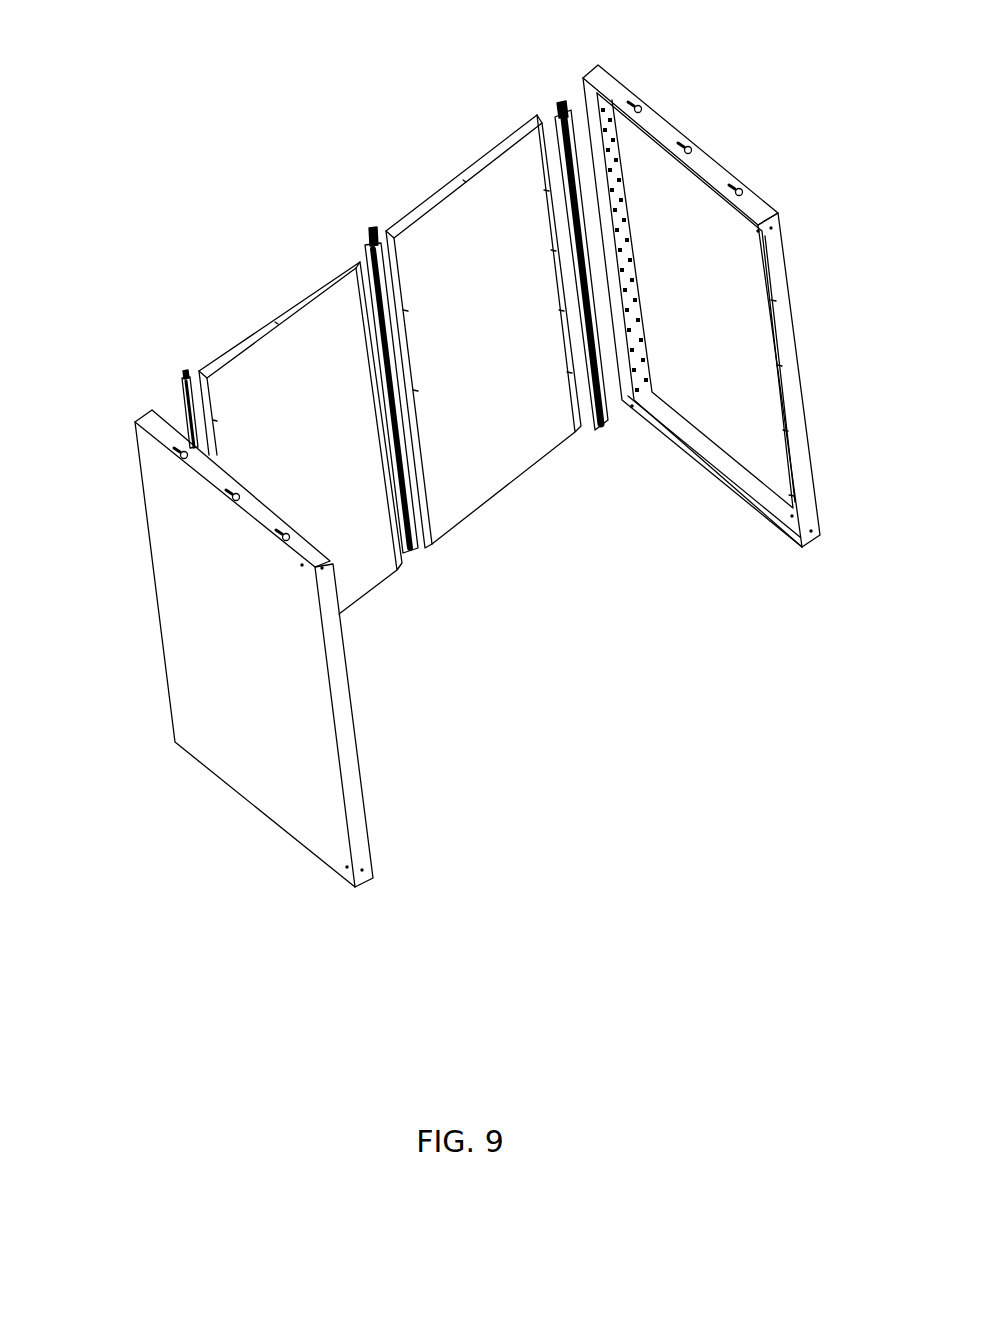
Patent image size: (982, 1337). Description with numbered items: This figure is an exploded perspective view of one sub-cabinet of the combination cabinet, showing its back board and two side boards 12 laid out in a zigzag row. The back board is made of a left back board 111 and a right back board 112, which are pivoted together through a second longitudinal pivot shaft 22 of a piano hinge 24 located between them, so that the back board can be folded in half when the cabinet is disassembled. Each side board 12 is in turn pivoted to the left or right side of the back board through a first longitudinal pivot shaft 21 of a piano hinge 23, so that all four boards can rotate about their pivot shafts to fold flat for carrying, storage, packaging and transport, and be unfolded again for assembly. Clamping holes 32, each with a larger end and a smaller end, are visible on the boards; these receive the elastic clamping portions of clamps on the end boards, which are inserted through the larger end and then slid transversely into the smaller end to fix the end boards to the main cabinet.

The side board 12 is at (736, 302).
The left back board 111 is at (290, 378).
The right back board 112 is at (482, 238).
The first longitudinal pivot shaft 21 is at (558, 103).
The second longitudinal pivot shaft 22 is at (372, 232).
The piano hinge 23 is at (556, 112).
The piano hinge 24 is at (370, 247).
The clamping hole 32 is at (740, 192).